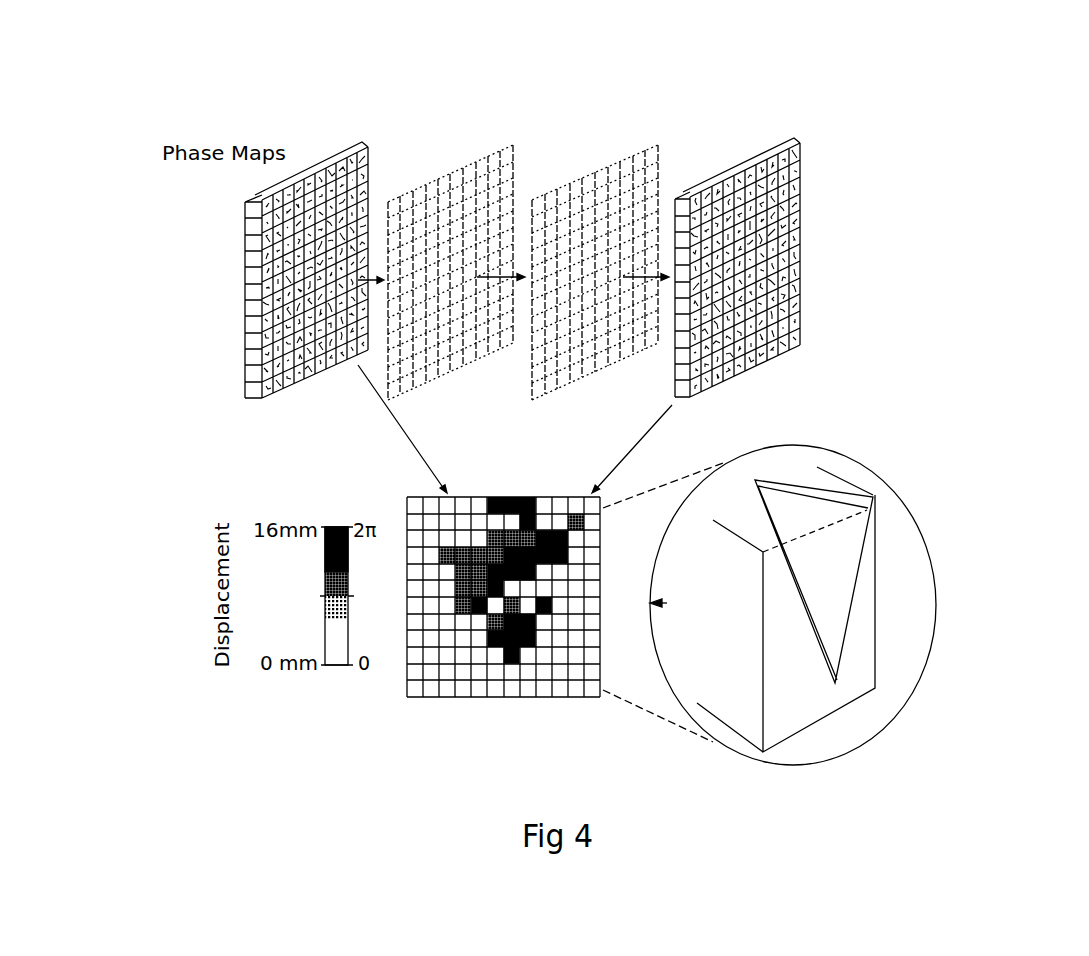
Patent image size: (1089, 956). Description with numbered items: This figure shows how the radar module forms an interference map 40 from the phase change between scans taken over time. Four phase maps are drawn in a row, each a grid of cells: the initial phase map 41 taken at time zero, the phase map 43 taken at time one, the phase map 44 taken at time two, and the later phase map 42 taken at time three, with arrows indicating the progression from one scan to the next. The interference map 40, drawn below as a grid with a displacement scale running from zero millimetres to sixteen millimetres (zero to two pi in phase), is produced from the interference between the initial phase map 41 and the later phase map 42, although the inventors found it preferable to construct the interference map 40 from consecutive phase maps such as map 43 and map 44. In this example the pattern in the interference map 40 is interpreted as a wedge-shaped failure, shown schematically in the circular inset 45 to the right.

The interference map 40 is at (400, 685).
The initial phase map 41 is at (243, 285).
The later phase map 42 is at (800, 270).
The phase map at time one 43 is at (460, 167).
The phase map at time two 44 is at (598, 167).
The inset 45 is at (937, 612).